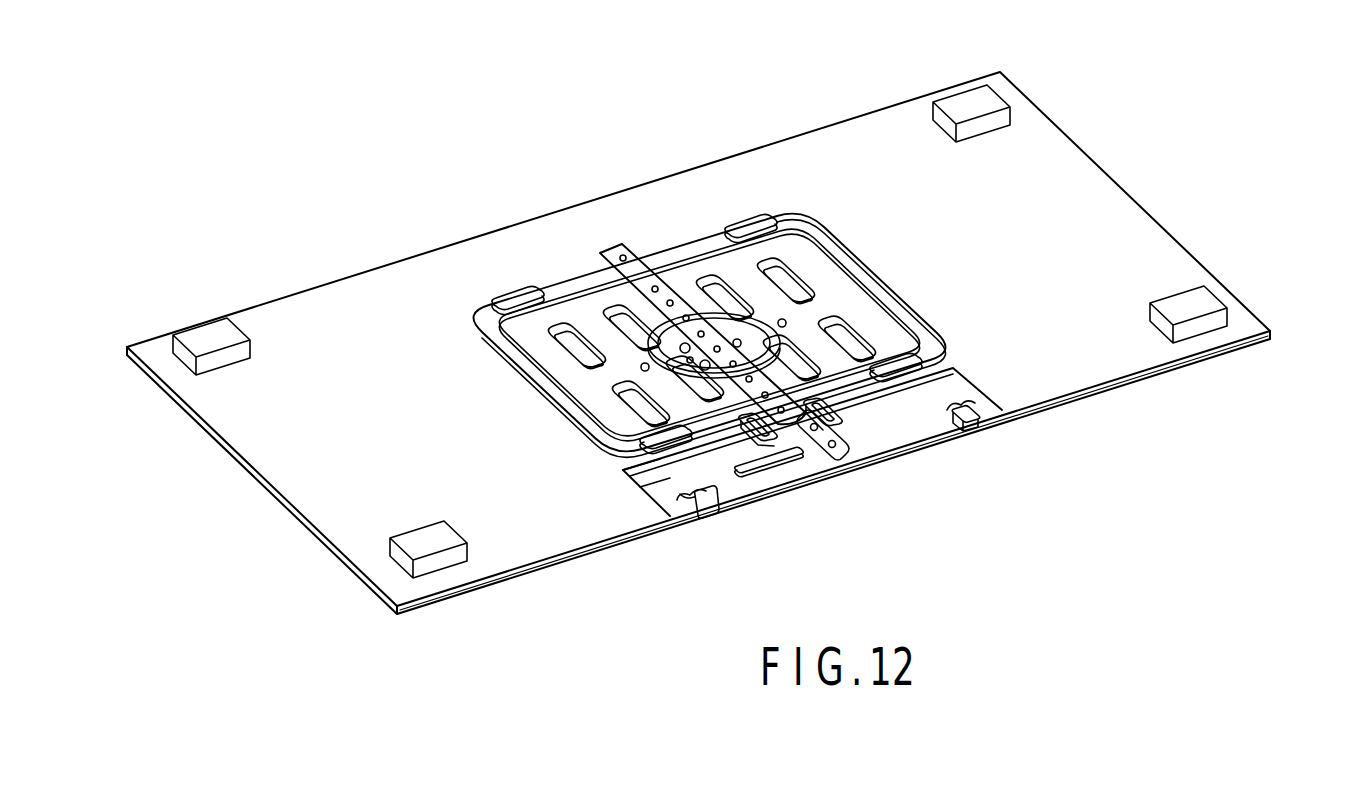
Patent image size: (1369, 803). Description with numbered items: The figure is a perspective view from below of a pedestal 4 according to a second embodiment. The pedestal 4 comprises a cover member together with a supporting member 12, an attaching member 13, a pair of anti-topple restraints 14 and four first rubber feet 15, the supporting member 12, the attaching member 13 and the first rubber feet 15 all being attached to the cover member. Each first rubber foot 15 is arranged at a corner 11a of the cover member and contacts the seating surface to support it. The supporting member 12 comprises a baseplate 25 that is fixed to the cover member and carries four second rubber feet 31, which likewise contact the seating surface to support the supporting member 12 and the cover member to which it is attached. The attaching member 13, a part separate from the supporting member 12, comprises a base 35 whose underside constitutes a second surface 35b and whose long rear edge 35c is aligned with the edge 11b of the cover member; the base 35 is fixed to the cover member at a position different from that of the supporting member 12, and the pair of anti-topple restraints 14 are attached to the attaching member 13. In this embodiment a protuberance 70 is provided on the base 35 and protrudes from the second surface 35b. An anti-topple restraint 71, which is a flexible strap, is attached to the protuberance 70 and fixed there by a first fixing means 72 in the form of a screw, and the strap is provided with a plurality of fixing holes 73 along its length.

The pedestal 4 is at (341, 230).
The corner 11a is at (1003, 72).
The edge 11b is at (848, 118).
The supporting member 12 is at (862, 265).
The attaching member 13 is at (962, 382).
The anti-topple restraint 14 is at (706, 520).
The first rubber foot 15 is at (207, 332).
The baseplate 25 is at (555, 368).
The second rubber foot 31 is at (750, 222).
The base 35 is at (655, 475).
The second surface 35b is at (660, 500).
The rear edge 35c is at (762, 505).
The protuberance 70 is at (797, 447).
The anti-topple restraint 71 is at (617, 247).
The first fixing means 72 is at (837, 450).
The fixing holes 73 is at (669, 301).